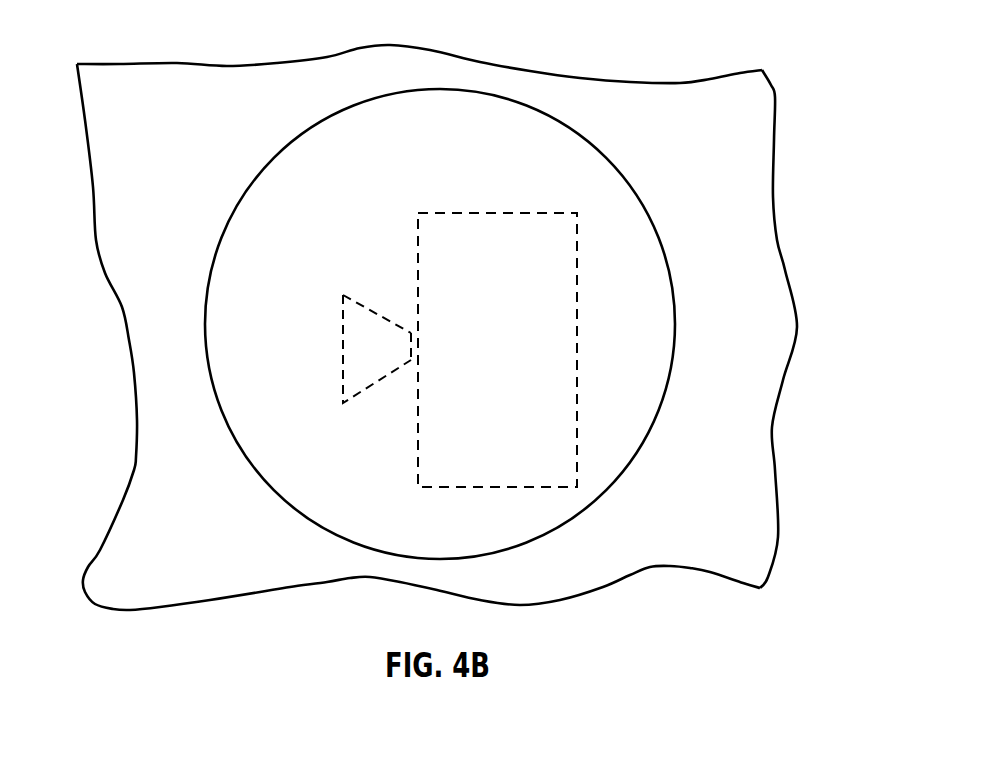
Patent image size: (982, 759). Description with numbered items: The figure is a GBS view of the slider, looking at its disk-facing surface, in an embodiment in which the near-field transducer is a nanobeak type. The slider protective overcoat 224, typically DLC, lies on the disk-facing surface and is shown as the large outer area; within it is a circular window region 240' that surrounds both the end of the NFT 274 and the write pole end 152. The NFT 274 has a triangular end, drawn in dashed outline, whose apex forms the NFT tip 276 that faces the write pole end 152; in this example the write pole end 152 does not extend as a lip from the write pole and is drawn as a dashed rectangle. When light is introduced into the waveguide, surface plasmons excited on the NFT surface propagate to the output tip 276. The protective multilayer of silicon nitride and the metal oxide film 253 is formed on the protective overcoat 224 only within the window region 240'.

The slider protective overcoat 224 is at (469, 327).
The gas bearing surface GBS is at (760, 235).
The window region 240' is at (441, 283).
The metal oxide film 253 is at (482, 115).
The write pole end 152 is at (518, 222).
The near-field transducer 274 is at (375, 349).
The NFT tip 276 is at (412, 350).